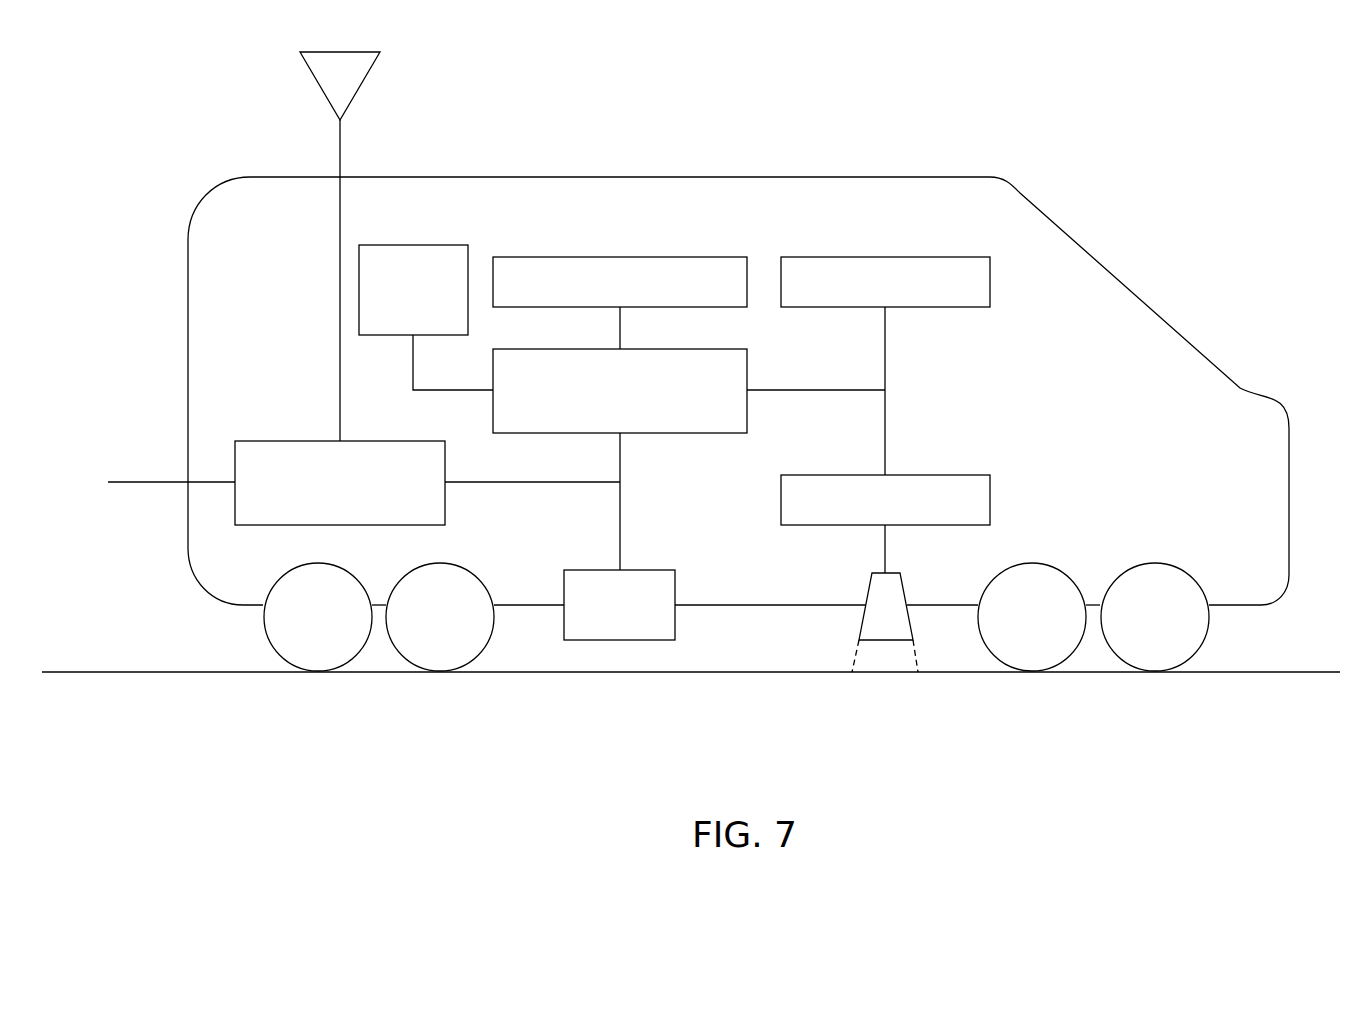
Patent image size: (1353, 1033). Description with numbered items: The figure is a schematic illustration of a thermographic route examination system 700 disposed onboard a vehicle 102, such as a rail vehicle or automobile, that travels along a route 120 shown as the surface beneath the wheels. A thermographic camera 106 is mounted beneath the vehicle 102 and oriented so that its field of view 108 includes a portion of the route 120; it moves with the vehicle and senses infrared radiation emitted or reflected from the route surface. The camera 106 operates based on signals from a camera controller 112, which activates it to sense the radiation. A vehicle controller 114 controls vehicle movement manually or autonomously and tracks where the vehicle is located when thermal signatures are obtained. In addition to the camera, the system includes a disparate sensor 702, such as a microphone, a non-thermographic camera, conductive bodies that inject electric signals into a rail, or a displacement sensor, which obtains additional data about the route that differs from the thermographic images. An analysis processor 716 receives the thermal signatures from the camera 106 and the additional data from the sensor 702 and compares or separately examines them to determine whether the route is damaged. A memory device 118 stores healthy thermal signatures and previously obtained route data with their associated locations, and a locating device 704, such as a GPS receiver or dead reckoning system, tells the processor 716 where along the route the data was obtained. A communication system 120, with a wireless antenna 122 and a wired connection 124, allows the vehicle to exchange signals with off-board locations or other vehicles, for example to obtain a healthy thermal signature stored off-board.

The vehicle 102 is at (1130, 287).
The camera 106 is at (870, 590).
The field of view 108 is at (852, 654).
The camera controller 112 is at (957, 475).
The vehicle controller 114 is at (957, 257).
The memory device 118 is at (690, 257).
The communication system 120 is at (365, 441).
The wireless antenna 122 is at (376, 78).
The wired connection 124 is at (157, 484).
The thermographic route examination system 700 is at (969, 700).
The sensor 702 is at (655, 570).
The locating device 704 is at (440, 245).
The analysis processor 716 is at (708, 434).